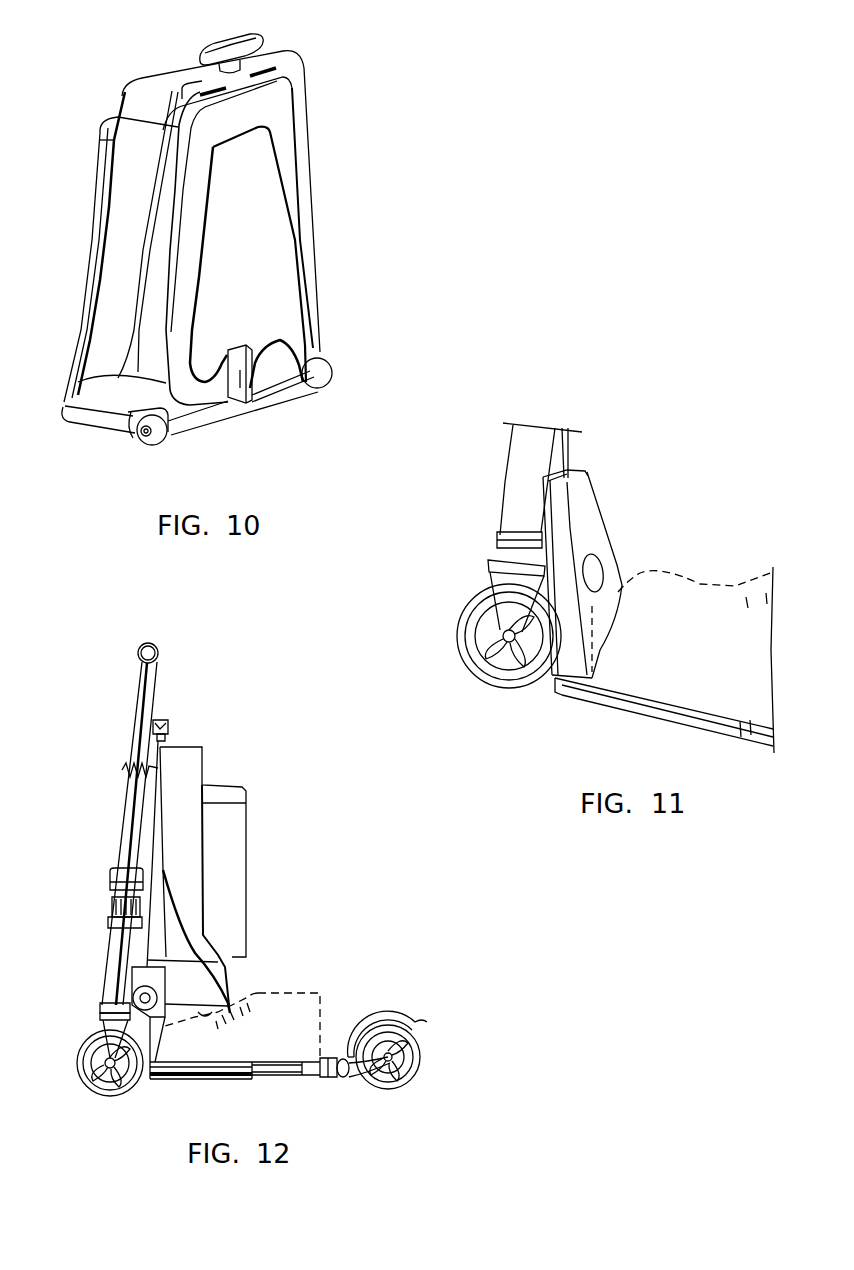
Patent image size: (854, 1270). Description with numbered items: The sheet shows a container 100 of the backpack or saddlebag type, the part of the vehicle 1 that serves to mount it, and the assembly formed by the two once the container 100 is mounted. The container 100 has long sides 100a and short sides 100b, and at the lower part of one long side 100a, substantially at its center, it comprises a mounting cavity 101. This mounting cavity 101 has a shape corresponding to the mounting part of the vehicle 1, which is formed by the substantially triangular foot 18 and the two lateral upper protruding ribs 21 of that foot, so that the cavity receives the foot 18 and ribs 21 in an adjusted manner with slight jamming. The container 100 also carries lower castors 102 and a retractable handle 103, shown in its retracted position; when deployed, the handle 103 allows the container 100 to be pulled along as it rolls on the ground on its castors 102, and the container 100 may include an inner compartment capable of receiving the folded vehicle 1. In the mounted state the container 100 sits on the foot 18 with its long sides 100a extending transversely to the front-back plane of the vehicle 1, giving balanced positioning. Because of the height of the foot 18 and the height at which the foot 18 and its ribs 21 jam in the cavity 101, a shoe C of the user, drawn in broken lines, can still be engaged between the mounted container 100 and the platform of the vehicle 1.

In FIG. 12, the vehicle 1 is at (452, 1012).
In FIG. 11, the foot 18 is at (590, 531).
In FIG. 12, the foot 18 is at (142, 1075).
In FIG. 11, the lateral upper protruding ribs 21 is at (570, 534).
In FIG. 11, the shoe C is at (720, 583).
In FIG. 12, the shoe C is at (288, 992).
In FIG. 10, the container 100 is at (357, 137).
In FIG. 12, the container 100 is at (225, 773).
In FIG. 10, the long sides 100a is at (258, 237).
In FIG. 10, the short sides 100b is at (130, 212).
In FIG. 10, the mounting cavity 101 is at (240, 404).
In FIG. 10, the lower castors 102 is at (158, 448).
In FIG. 10, the retractable handle 103 is at (230, 41).